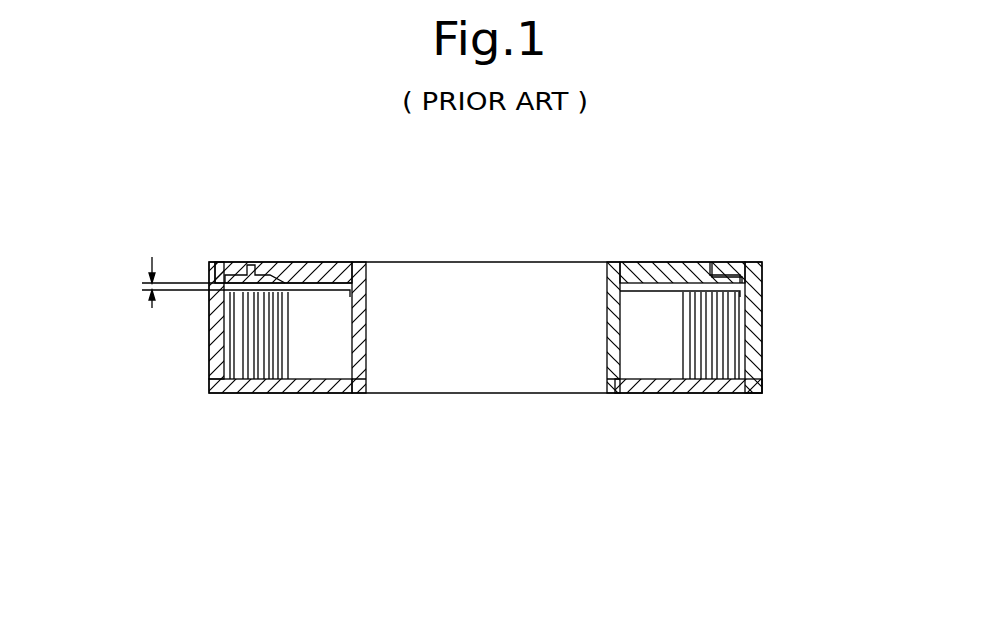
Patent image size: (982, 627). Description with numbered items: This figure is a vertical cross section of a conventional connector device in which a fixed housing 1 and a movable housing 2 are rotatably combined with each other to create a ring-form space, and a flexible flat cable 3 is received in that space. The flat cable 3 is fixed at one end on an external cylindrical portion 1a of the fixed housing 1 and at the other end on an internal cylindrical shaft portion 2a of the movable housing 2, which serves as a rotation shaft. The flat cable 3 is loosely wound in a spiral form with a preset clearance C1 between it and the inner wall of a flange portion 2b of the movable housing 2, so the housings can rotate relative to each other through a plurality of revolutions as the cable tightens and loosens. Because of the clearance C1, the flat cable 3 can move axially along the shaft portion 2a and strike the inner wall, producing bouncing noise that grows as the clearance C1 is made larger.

The fixed housing 1 is at (485, 305).
The external cylindrical portion 1a is at (213, 346).
The movable housing 2 is at (443, 285).
The internal cylindrical shaft portion 2a is at (373, 330).
The flange portion 2b is at (317, 271).
The flexible flat cable 3 is at (715, 368).
The clearance C1 is at (143, 283).